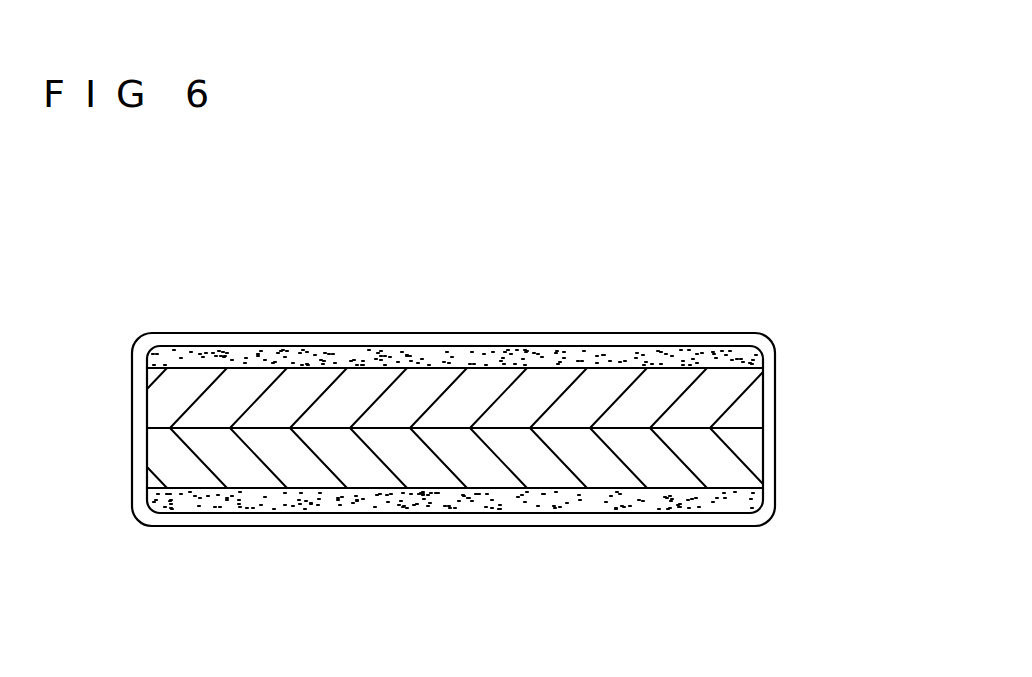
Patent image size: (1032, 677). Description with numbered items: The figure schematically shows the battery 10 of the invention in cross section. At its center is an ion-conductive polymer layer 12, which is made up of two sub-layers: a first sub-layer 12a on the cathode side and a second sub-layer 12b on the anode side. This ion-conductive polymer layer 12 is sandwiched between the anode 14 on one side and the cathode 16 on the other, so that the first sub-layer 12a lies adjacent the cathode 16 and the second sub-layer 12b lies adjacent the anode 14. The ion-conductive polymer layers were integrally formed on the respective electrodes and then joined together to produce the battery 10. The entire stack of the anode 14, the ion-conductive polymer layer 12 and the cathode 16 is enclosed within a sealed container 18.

The battery 10 is at (585, 298).
The ion-conductive polymer layer 12 is at (480, 435).
The first sub-layer 12a is at (717, 400).
The second sub-layer 12b is at (717, 458).
The anode 14 is at (338, 497).
The cathode 16 is at (297, 352).
The sealed container 18 is at (505, 520).